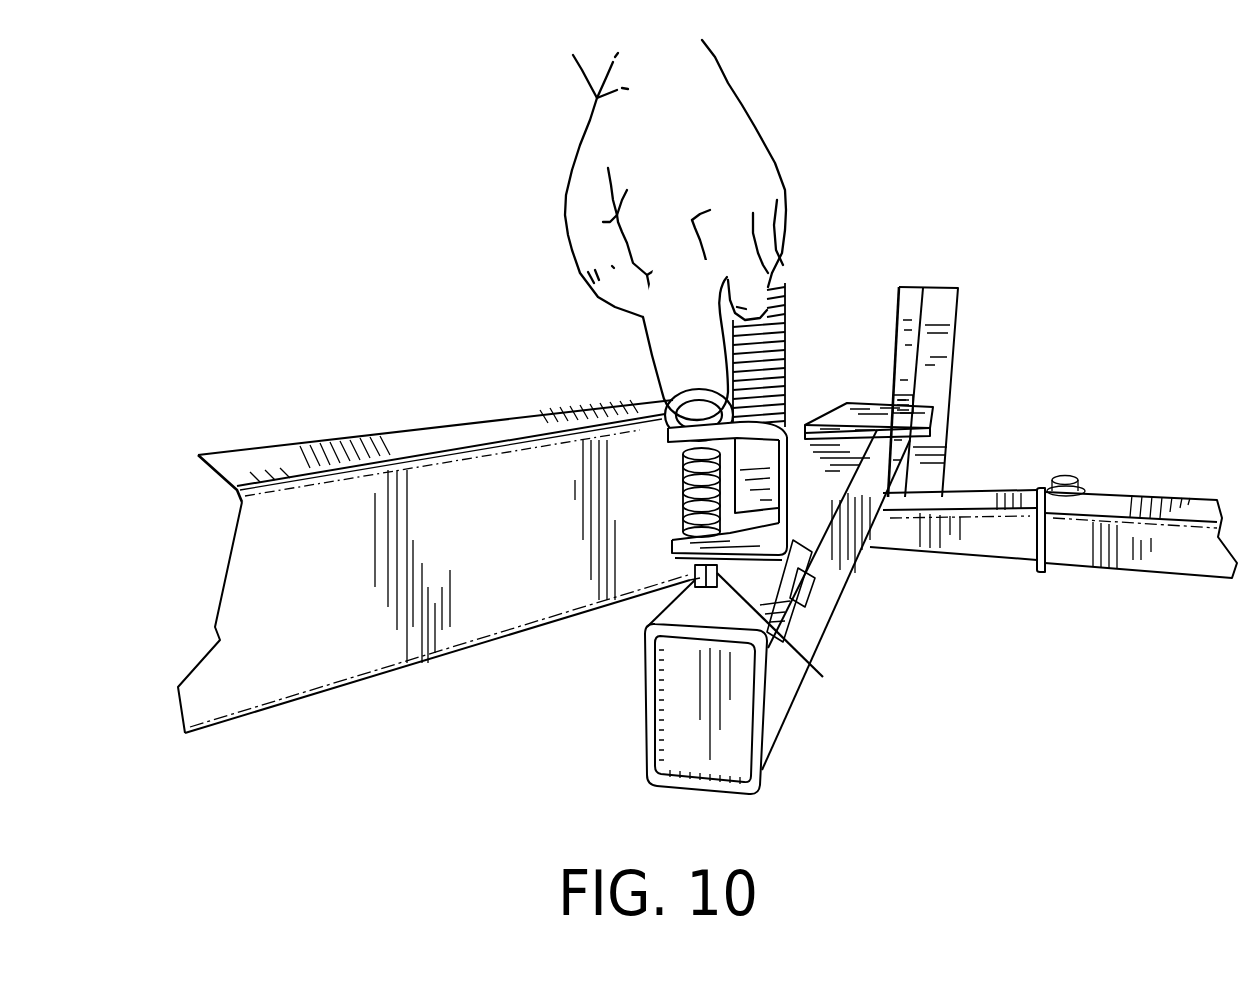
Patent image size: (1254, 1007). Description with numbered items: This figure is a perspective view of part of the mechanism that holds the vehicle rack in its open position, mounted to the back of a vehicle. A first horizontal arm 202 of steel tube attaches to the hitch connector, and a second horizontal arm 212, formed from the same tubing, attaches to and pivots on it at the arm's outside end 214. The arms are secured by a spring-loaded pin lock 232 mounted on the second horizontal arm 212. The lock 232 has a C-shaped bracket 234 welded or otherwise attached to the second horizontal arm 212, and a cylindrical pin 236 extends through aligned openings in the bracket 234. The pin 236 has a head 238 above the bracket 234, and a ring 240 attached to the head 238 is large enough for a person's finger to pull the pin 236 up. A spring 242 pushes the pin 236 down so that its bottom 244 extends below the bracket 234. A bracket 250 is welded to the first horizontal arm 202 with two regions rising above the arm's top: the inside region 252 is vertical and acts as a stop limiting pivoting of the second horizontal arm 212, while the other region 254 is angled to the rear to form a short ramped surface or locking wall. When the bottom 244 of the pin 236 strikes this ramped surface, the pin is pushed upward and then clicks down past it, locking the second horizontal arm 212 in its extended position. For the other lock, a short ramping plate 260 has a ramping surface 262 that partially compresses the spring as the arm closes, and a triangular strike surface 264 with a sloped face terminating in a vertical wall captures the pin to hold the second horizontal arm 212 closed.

The first horizontal arm 202 is at (842, 602).
The second horizontal arm 212 is at (317, 456).
The outside end 214 is at (780, 547).
The second spring lock 232 is at (665, 490).
The C-shaped bracket 234 is at (790, 450).
The cylindrical pin 236 is at (686, 514).
The head 238 is at (772, 305).
The ring 240 is at (660, 400).
The spring 242 is at (693, 582).
The bottom 244 is at (800, 680).
The bracket 250 is at (810, 635).
The inside region 252 is at (832, 565).
The angled region 254 is at (780, 640).
The ramping plate 260 is at (893, 403).
The ramping surface 262 is at (803, 423).
The strike surface 264 is at (893, 410).